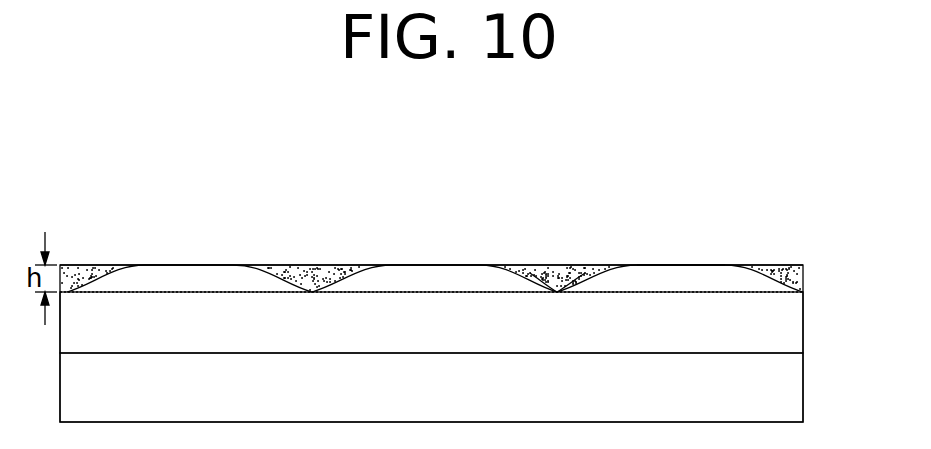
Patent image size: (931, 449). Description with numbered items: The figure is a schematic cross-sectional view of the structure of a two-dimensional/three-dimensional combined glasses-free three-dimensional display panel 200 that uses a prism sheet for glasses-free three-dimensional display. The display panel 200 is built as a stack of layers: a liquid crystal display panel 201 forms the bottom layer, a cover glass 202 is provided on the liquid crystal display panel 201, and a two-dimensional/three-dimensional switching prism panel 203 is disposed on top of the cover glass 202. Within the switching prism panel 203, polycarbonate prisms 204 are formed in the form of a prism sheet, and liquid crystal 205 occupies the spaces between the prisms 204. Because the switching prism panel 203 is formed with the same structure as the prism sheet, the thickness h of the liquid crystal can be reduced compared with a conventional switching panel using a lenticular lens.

The 2D/3D combined glasses-free 3D display panel 200 is at (446, 161).
The liquid crystal display panel 201 is at (804, 386).
The cover glass 202 is at (804, 321).
The 2D/3D switching prism panel 203 is at (804, 276).
The polycarbonate prism 204 is at (683, 280).
The liquid crystal 205 is at (555, 278).